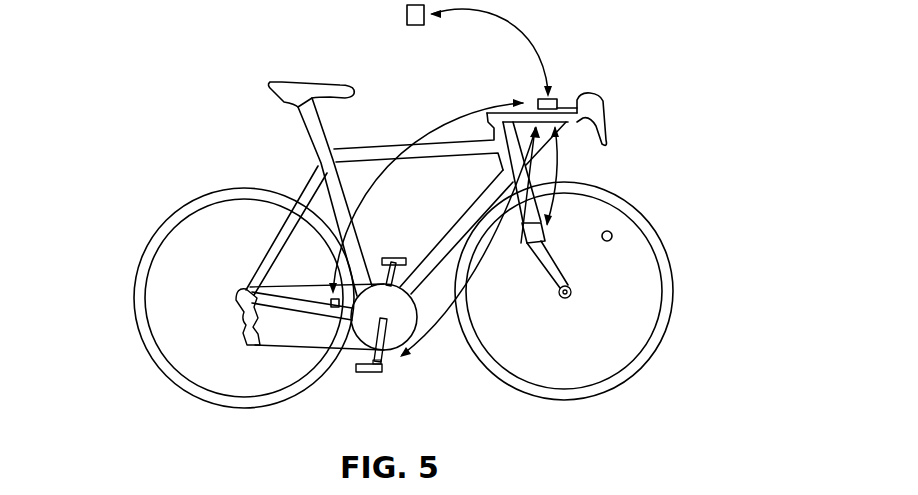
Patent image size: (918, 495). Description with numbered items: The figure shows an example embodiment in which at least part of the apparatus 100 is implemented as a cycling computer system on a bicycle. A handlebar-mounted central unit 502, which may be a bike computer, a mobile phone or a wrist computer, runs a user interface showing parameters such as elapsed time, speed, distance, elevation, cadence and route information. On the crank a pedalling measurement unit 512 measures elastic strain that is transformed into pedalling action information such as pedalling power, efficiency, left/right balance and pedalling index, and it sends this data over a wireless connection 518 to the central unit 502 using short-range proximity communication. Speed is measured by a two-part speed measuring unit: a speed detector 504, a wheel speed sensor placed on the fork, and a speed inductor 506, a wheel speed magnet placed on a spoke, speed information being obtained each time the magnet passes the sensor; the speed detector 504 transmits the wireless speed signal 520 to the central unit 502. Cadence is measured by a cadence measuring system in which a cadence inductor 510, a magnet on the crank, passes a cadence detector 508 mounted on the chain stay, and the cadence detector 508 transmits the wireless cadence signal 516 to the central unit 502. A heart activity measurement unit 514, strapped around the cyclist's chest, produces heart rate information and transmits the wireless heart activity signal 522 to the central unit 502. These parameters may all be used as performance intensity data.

The apparatus 100 is at (79, 207).
The central unit 502 is at (560, 99).
The speed detector 504 is at (523, 240).
The speed inductor 506 is at (607, 241).
The cadence detector 508 is at (336, 309).
The cadence inductor 510 is at (372, 357).
The pedalling measurement unit 512 is at (383, 368).
The heart activity measurement unit 514 is at (405, 15).
The wireless cadence signal 516 is at (432, 127).
The wireless connection 518 is at (474, 268).
The wireless speed signal 520 is at (538, 161).
The wireless heart activity signal 522 is at (511, 16).